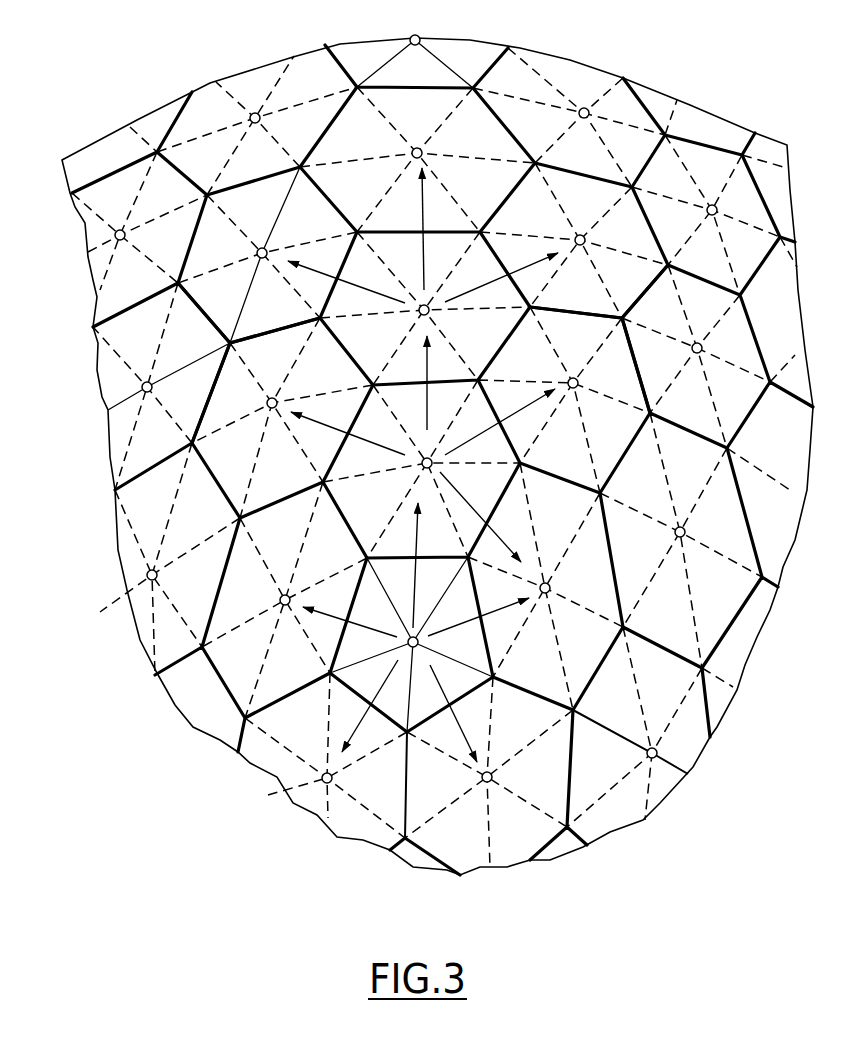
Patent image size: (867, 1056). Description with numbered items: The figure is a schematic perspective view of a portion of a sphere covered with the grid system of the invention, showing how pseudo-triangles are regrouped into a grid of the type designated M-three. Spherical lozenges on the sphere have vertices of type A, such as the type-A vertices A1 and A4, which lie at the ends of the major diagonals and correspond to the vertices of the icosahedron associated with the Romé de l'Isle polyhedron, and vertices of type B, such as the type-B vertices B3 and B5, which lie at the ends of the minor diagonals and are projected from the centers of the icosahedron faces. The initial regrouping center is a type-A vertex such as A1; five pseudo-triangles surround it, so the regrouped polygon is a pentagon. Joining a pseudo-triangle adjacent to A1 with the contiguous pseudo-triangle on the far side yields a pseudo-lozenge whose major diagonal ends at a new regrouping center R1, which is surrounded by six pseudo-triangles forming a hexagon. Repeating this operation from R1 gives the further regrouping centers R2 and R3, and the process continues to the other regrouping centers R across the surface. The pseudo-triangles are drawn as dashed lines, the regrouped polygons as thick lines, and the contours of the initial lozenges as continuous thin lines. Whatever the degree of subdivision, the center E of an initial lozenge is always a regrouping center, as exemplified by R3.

The type-A vertex A4 is at (419, 24).
The type-A vertex A1 is at (417, 648).
The regrouping center R1 is at (420, 468).
The regrouping center R2 is at (579, 384).
The regrouping center R3 is at (430, 315).
The regrouping center R is at (259, 113).
The center of the initial lozenge E is at (119, 229).
The type-B vertex B3 is at (234, 338).
The type-B vertex B5 is at (622, 312).